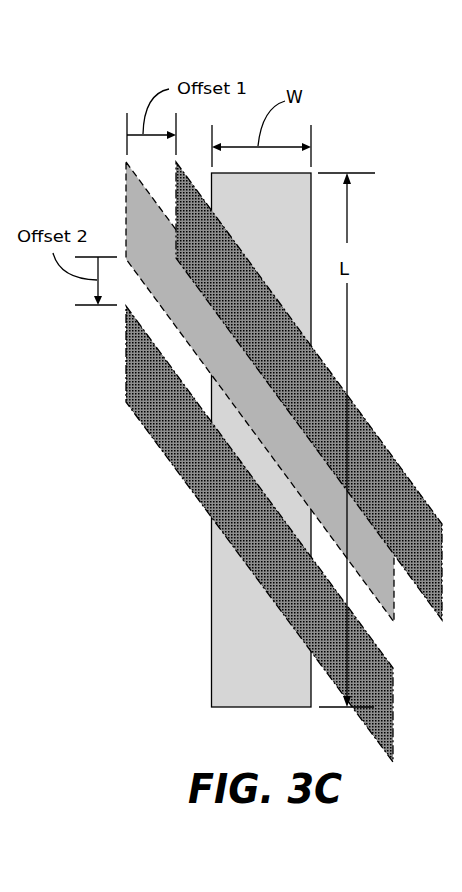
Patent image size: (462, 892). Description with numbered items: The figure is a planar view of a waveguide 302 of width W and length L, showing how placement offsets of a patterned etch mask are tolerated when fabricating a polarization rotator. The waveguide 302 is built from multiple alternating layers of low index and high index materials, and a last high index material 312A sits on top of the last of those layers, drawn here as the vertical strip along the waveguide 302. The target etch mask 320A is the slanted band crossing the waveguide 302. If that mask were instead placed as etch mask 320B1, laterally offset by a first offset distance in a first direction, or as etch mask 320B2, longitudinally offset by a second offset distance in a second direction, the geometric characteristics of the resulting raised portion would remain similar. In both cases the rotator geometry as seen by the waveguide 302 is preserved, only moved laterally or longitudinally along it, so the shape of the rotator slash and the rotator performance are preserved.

The waveguide 302 is at (159, 64).
The last high index material 312A is at (292, 217).
The etch mask 320A is at (133, 212).
The etch mask 320B1 is at (238, 260).
The etch mask 320B2 is at (186, 406).